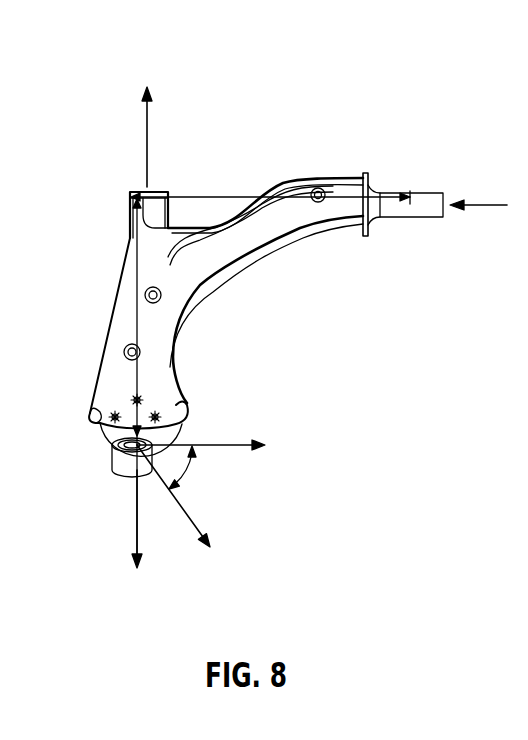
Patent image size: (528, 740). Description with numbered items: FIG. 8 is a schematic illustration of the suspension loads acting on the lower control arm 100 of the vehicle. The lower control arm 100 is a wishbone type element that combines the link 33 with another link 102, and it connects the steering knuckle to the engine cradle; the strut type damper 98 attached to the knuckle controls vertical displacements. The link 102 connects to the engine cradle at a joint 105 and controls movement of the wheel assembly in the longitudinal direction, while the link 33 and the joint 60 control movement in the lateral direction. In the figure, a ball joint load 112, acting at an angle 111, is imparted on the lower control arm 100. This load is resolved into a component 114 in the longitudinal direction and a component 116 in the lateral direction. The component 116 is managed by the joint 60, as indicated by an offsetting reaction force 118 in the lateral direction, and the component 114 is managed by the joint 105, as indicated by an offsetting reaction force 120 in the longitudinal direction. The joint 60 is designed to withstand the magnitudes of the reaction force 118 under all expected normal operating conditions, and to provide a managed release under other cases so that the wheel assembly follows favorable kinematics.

The link 33 is at (137, 262).
The joint 60 is at (113, 218).
The strut type damper 98 is at (113, 458).
The lower control arm 100 is at (205, 278).
The link 102 is at (347, 186).
The joint 105 is at (380, 240).
The angle 111 is at (187, 470).
The ball joint load 112 is at (198, 527).
The component 114 is at (227, 443).
The component 116 is at (137, 510).
The reaction force 118 is at (147, 142).
The reaction force 120 is at (485, 204).